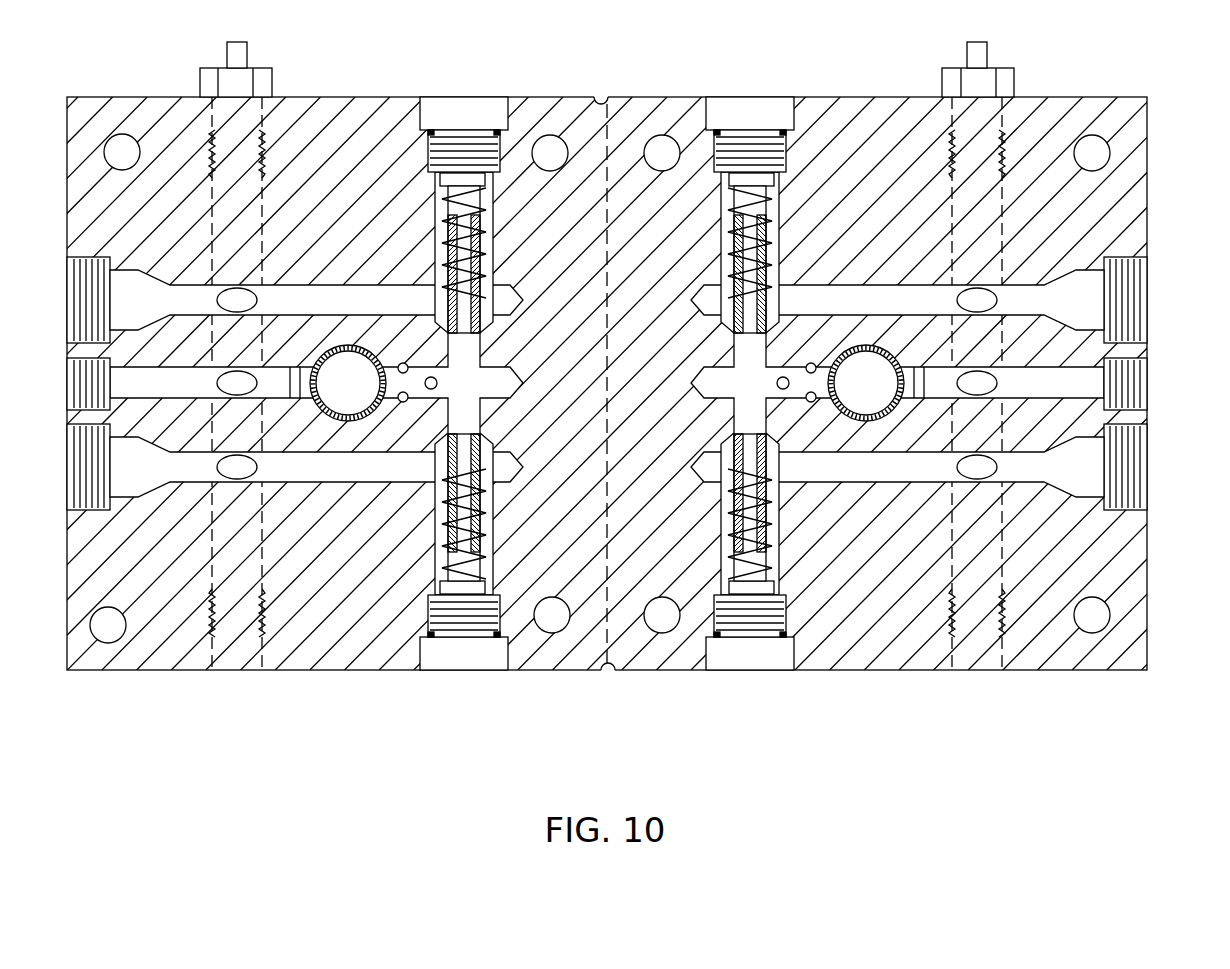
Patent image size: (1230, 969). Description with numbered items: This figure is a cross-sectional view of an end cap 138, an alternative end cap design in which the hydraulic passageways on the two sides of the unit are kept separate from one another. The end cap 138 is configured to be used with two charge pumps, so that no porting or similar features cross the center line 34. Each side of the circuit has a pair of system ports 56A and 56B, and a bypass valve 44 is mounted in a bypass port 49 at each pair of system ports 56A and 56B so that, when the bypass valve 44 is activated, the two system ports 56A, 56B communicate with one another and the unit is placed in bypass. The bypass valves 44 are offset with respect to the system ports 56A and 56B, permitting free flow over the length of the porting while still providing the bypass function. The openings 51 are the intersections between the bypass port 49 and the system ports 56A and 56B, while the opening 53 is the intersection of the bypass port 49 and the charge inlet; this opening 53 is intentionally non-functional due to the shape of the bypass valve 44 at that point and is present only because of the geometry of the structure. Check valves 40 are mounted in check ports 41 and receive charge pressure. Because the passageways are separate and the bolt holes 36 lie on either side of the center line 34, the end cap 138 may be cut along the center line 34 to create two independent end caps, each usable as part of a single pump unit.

The end cap 138 is at (138, 97).
The bypass valve 44 is at (200, 70).
The center line 34 is at (599, 97).
The bolt holes 36 is at (552, 135).
The check valve 40 is at (463, 112).
The check port 41 is at (440, 212).
The opening 51 is at (980, 298).
The opening 53 is at (975, 383).
The system port 56A is at (116, 310).
The system port 56B is at (116, 476).
The bypass port 49 is at (978, 648).